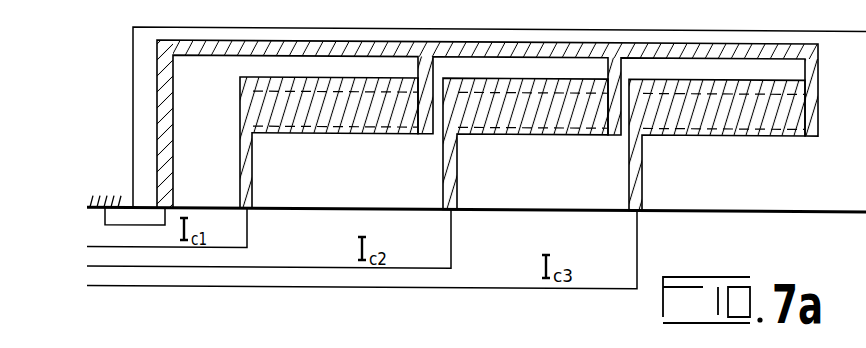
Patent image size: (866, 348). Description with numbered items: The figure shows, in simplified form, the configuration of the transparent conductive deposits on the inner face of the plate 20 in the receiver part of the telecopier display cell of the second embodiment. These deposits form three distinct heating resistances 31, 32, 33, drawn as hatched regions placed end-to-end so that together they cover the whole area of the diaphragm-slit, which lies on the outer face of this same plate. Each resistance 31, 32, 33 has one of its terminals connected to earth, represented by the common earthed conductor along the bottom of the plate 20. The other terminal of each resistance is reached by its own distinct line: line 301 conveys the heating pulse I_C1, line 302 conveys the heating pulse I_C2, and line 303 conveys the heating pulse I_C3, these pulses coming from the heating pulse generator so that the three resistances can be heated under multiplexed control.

The plate 20 is at (830, 194).
The resistance 31 is at (353, 121).
The resistance 32 is at (553, 122).
The resistance 33 is at (755, 122).
The line 301 is at (248, 237).
The line 302 is at (452, 238).
The line 303 is at (638, 238).